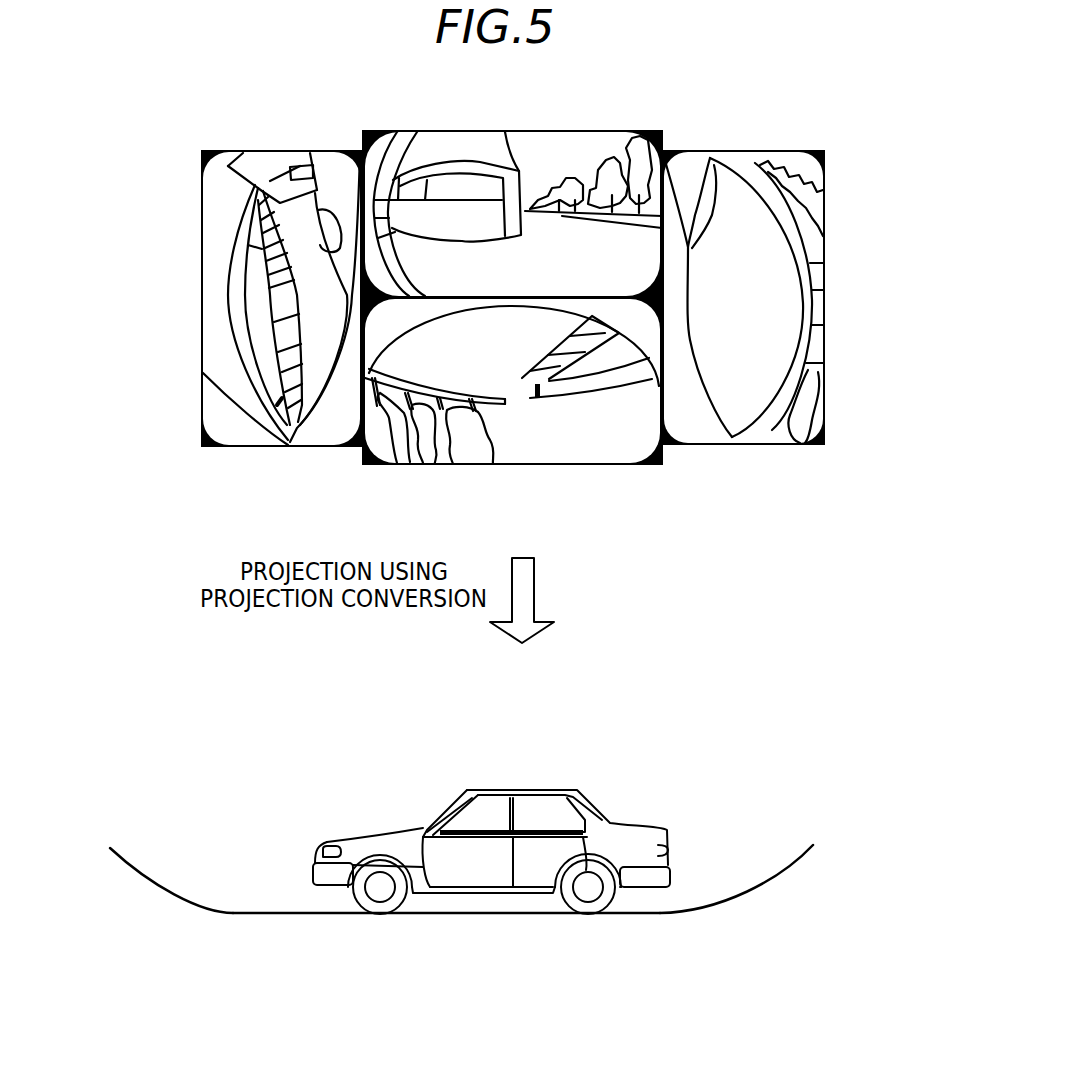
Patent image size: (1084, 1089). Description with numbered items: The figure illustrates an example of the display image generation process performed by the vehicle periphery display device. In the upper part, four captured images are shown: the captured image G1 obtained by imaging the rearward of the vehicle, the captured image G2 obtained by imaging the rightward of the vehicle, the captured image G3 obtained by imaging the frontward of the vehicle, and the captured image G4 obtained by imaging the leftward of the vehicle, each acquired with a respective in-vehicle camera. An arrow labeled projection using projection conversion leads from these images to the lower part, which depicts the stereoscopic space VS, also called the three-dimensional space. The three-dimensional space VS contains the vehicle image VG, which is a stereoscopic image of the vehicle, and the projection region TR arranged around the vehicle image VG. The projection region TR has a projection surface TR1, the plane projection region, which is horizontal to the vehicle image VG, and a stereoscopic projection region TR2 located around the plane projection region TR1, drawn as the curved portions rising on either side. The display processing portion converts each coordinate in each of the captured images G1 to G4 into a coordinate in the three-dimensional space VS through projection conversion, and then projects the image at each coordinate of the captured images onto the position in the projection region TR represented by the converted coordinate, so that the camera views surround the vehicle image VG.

The captured image G1 is at (547, 452).
The captured image G2 is at (820, 393).
The captured image G3 is at (547, 130).
The captured image G4 is at (213, 293).
The stereoscopic space VS is at (472, 837).
The vehicle image VG is at (523, 790).
The projection region TR is at (472, 894).
The projection surface TR1 is at (645, 915).
The stereoscopic projection region TR2 is at (182, 902).